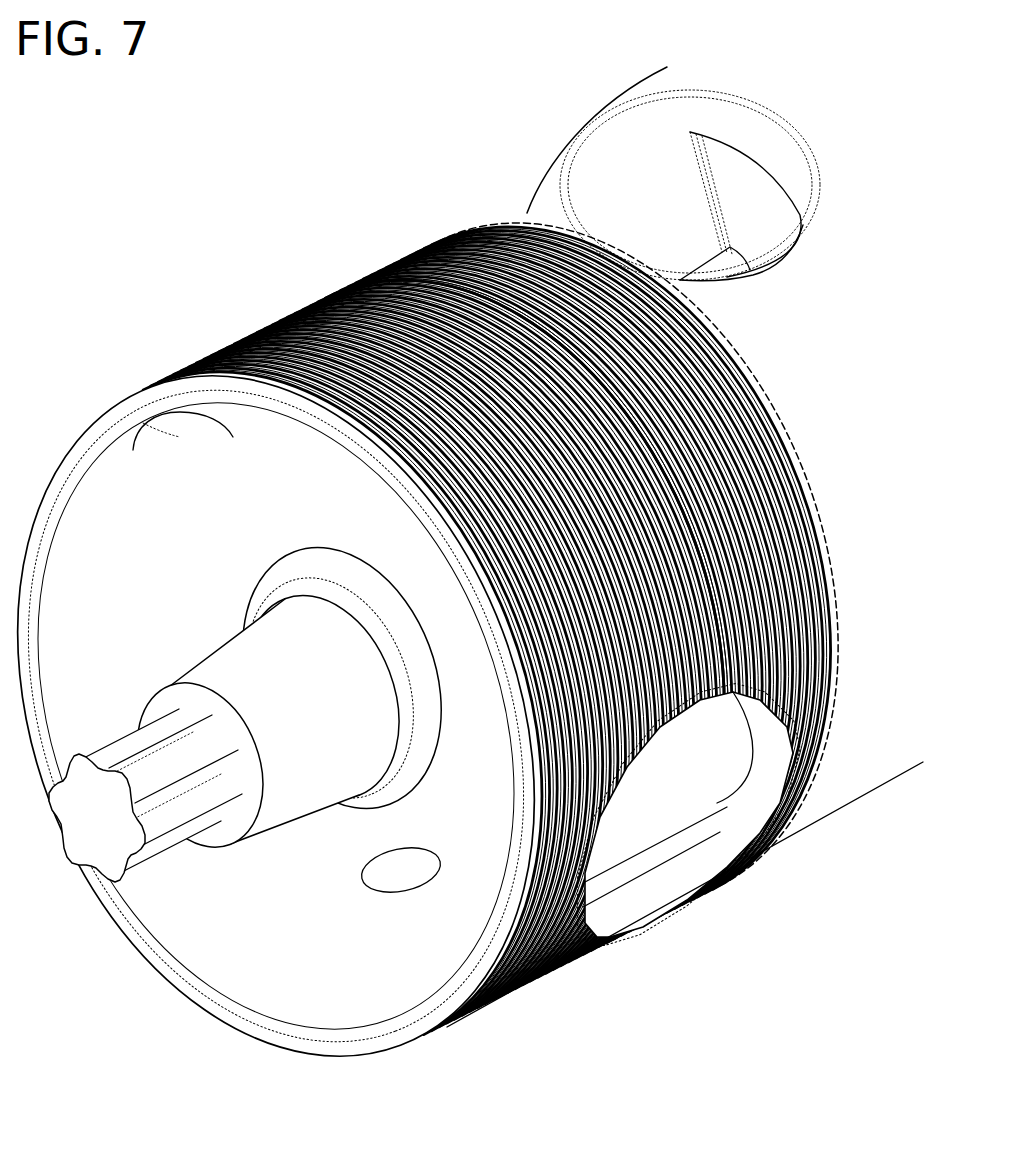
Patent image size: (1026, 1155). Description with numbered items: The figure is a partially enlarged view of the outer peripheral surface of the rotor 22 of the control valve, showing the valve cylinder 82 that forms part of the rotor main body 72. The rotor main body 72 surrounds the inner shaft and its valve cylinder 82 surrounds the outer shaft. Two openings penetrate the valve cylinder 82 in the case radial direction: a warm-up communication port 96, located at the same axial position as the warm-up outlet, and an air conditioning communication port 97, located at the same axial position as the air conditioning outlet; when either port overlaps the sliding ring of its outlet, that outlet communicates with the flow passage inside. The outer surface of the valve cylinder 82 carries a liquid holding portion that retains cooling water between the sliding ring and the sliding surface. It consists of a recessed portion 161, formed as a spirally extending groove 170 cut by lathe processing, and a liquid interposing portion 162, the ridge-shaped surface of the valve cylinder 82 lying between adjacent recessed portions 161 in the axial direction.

The rotor 22 is at (466, 599).
The rotor main body 72 is at (313, 608).
The air conditioning communication port 97 is at (652, 174).
The groove 170 is at (770, 614).
The liquid interposing portion 162 is at (800, 652).
The recessed portion 161 is at (800, 690).
The valve cylinder 82 is at (858, 764).
The warm-up communication port 96 is at (627, 767).